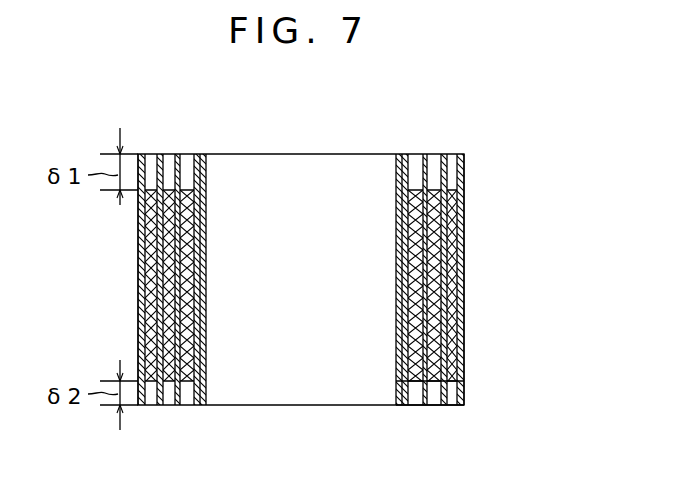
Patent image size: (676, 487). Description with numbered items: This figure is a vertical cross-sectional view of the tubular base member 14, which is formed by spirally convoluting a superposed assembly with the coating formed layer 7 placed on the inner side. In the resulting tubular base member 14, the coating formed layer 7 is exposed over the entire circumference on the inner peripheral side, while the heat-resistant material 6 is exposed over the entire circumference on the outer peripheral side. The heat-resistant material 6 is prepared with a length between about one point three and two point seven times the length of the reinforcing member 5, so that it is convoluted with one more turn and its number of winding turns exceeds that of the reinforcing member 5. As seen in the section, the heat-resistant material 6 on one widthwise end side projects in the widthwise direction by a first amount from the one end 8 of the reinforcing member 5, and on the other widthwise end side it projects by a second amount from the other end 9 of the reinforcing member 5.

The reinforcing member 5 is at (455, 208).
The heat-resistant material 6 is at (422, 178).
The coating formed layer 7 is at (206, 230).
The one end of the reinforcing member 8 is at (453, 185).
The other end of the reinforcing member 9 is at (445, 396).
The tubular base member 14 is at (468, 285).